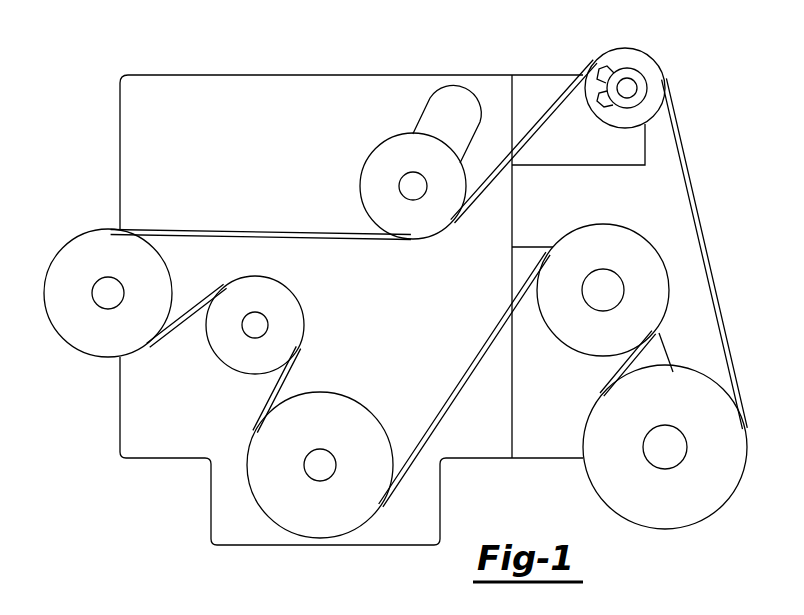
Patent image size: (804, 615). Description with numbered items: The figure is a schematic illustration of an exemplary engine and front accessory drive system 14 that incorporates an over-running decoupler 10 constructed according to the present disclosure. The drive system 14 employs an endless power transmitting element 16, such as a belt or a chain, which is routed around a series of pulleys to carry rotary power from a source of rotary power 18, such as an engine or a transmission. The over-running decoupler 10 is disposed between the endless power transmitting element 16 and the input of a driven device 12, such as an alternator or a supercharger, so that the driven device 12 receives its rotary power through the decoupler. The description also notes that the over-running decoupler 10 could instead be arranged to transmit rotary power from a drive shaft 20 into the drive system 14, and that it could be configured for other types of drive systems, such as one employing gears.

The over-running decoupler 10 is at (645, 98).
The driven device 12 is at (636, 58).
The drive system 14 is at (120, 402).
The endless power transmitting element 16 is at (238, 232).
The source of rotary power 18 is at (232, 490).
The drive shaft 20 is at (333, 470).